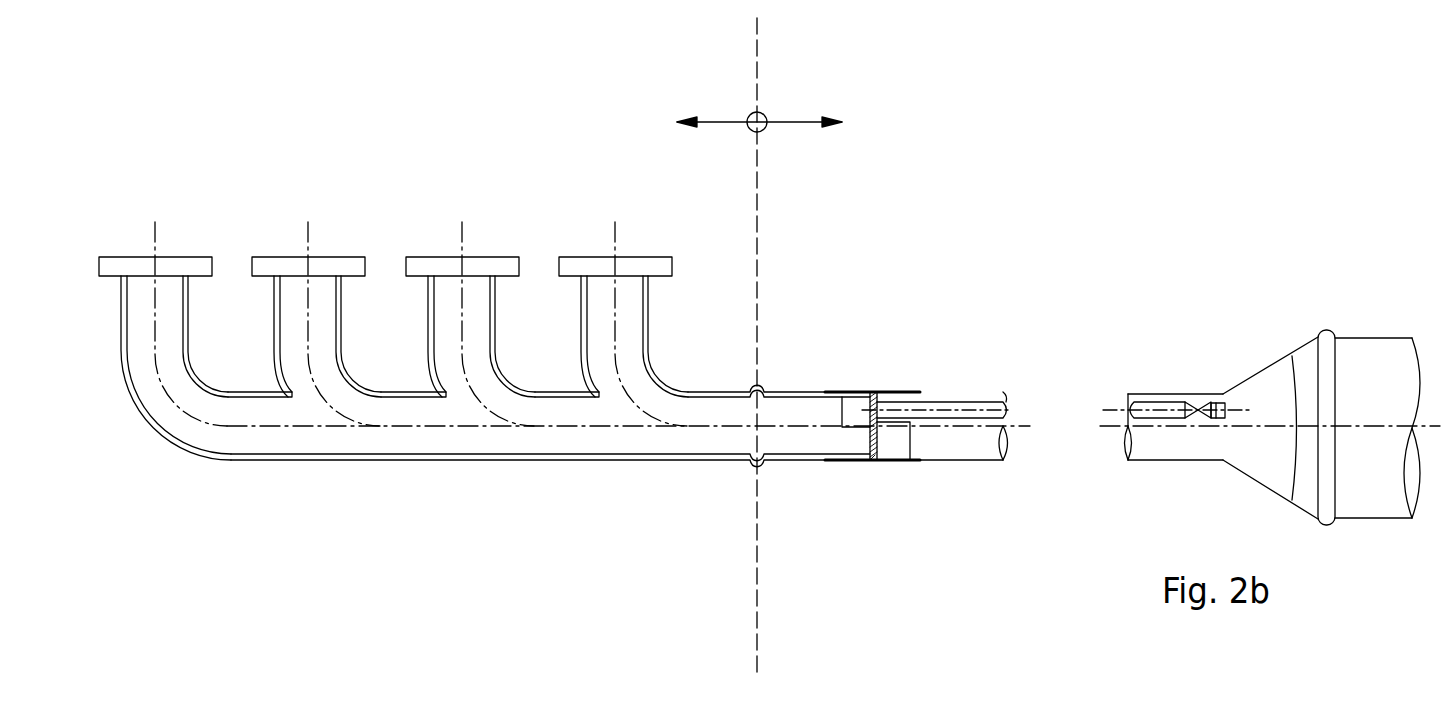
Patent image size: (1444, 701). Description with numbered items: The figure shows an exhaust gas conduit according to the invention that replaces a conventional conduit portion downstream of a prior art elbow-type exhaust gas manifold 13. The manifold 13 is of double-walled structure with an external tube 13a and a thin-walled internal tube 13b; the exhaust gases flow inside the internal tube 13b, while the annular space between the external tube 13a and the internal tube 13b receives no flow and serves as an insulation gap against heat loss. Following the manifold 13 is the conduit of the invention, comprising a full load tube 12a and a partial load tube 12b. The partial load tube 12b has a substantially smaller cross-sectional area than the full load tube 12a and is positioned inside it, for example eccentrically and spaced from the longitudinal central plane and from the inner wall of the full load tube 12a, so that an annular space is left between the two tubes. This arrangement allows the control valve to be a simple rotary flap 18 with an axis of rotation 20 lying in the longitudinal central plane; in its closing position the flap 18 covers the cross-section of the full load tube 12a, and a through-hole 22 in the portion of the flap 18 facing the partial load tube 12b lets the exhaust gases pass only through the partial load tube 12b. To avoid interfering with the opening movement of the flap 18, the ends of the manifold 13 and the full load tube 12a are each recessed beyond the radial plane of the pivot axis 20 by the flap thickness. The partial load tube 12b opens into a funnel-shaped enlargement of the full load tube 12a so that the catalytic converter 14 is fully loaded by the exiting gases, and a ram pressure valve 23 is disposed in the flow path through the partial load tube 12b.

The full load tube 12a is at (963, 461).
The partial load tube 12b is at (970, 400).
The exhaust gas manifold 13 is at (312, 440).
The external tube 13a is at (480, 458).
The internal tube 13b is at (628, 455).
The catalytic converter 14 is at (1360, 352).
The rotary flap 18 is at (878, 460).
The axis of rotation 20 is at (875, 422).
The through-hole 22 is at (872, 405).
The ram pressure valve 23 is at (1212, 397).